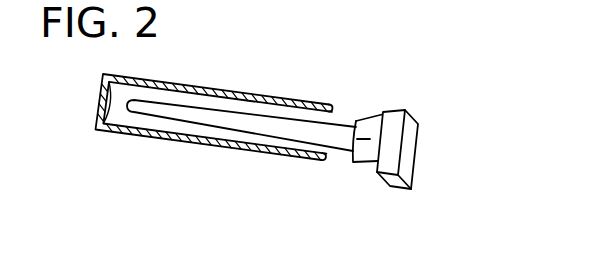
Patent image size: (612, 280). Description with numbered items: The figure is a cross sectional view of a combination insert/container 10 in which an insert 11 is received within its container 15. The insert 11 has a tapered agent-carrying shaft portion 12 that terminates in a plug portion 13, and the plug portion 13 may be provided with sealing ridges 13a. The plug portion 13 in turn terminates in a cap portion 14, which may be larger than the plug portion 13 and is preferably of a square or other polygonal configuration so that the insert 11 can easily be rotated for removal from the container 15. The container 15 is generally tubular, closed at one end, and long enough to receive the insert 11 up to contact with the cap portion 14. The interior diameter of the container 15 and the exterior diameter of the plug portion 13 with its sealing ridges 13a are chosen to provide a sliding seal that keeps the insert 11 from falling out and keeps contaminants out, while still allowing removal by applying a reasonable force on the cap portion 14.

The combination insert/container 10 is at (228, 184).
The insert 11 is at (440, 113).
The tapered agent-carrying shaft portion 12 is at (247, 121).
The plug portion 13 is at (355, 148).
The sealing ridges 13a is at (357, 118).
The cap portion 14 is at (425, 172).
The container 15 is at (156, 139).